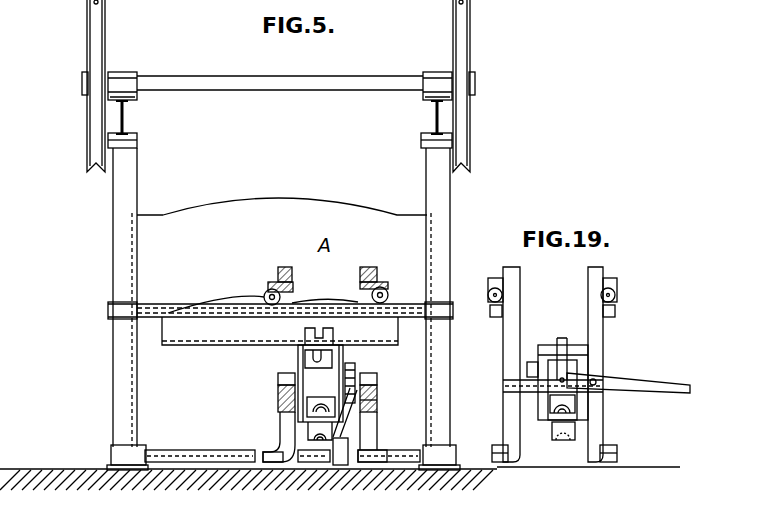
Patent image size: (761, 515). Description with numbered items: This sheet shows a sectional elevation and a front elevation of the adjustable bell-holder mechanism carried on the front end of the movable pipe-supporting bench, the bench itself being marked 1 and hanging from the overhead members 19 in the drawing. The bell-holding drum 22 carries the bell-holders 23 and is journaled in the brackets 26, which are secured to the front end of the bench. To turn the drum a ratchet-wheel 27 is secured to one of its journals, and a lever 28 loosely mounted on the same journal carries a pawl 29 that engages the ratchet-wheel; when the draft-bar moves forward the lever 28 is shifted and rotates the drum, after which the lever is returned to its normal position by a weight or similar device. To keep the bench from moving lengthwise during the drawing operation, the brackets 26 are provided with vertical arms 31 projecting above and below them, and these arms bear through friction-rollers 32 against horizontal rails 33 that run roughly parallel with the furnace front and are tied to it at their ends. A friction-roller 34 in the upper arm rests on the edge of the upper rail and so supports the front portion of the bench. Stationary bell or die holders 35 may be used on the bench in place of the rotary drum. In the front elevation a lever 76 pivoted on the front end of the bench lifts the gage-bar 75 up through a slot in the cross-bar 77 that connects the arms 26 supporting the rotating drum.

In FIG. 5, the trolley hanger 1 is at (125, 118).
In FIG. 5, the overhead rail 19 is at (88, 114).
In FIG. 5, the polygonal drum 22 is at (347, 382).
In FIG. 19, the polygonal drum 22 is at (550, 415).
In FIG. 5, the bell-holder 23 is at (307, 362).
In FIG. 19, the bell-holder 23 is at (562, 441).
In FIG. 5, the bracket 26 is at (283, 400).
In FIG. 19, the bracket 26 is at (510, 388).
In FIG. 5, the ratchet-wheel 27 is at (354, 366).
In FIG. 5, the lever 28 is at (355, 420).
In FIG. 5, the pawl 29 is at (377, 400).
In FIG. 5, the vertical arm 31 is at (358, 277).
In FIG. 19, the vertical arm 31 is at (588, 289).
In FIG. 5, the friction-roller 32 is at (270, 455).
In FIG. 5, the horizontal rail 33 is at (172, 312).
In FIG. 19, the horizontal rail 33 is at (492, 311).
In FIG. 5, the friction-roller 34 is at (265, 293).
In FIG. 19, the friction-roller 34 is at (488, 294).
In FIG. 5, the stationary bell or die holder 35 is at (220, 514).
In FIG. 19, the gage-bar 75 is at (562, 340).
In FIG. 19, the lever 76 is at (637, 387).
In FIG. 19, the cross-bar 77 is at (590, 358).